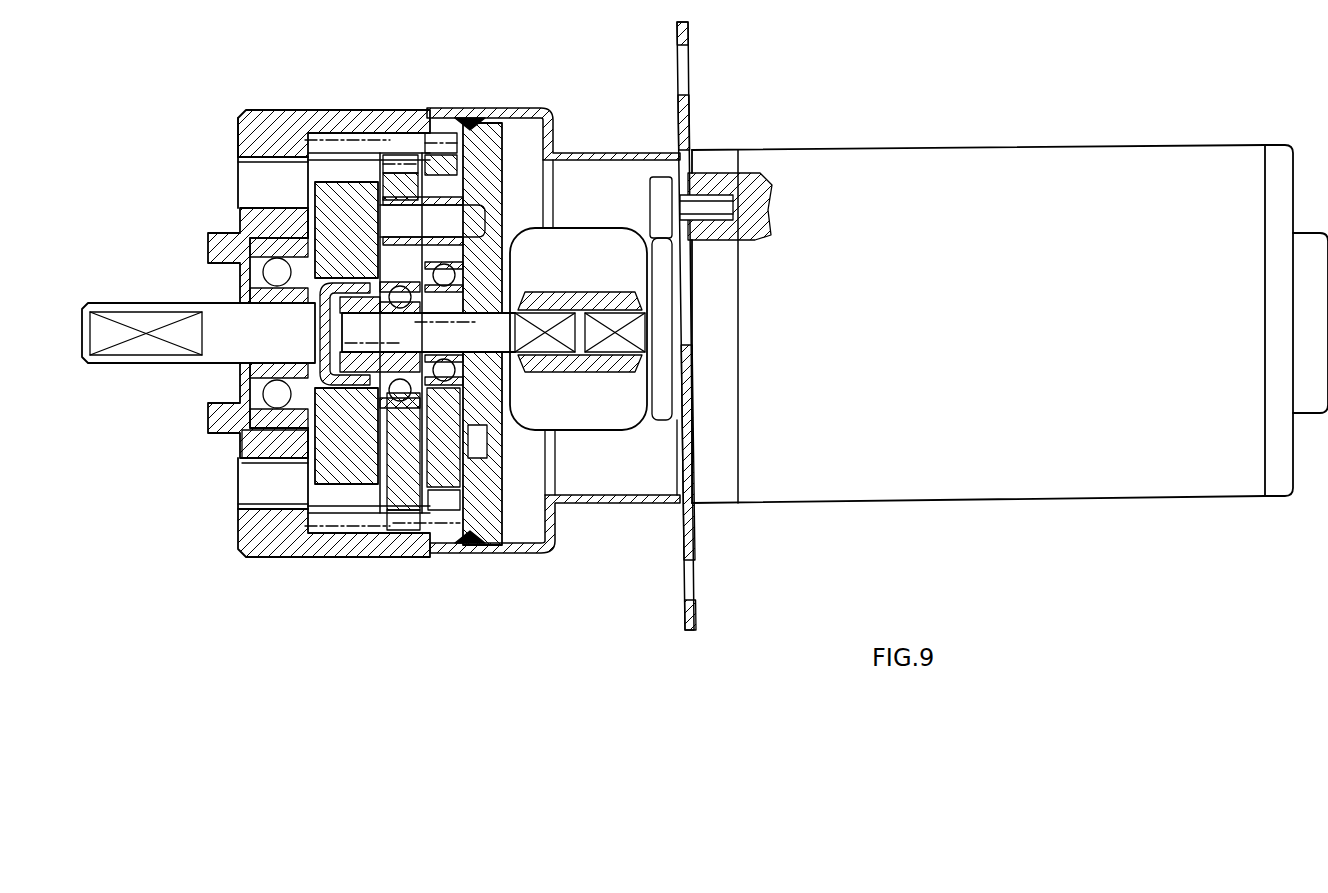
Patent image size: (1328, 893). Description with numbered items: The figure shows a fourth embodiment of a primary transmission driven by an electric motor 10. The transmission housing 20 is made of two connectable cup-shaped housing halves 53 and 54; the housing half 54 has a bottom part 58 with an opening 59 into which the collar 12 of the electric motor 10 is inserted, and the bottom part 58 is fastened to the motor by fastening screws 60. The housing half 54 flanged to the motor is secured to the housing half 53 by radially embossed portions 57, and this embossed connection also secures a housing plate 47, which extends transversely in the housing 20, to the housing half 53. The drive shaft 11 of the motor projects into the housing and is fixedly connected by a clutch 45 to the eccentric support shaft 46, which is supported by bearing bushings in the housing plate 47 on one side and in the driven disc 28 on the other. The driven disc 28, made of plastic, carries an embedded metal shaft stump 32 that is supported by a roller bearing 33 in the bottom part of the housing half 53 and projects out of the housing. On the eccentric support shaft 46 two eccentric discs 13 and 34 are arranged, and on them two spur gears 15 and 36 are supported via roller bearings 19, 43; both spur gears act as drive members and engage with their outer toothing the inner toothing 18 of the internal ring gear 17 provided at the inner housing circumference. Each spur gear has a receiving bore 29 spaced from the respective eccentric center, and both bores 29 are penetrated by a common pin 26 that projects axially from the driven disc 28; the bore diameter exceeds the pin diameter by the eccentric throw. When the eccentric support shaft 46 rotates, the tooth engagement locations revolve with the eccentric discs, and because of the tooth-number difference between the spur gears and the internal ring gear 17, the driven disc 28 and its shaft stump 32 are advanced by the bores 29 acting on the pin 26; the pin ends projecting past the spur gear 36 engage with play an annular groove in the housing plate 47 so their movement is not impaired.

The electric motor 10 is at (922, 165).
The drive shaft 11 is at (610, 313).
The collar 12 is at (690, 287).
The eccentric disc 13 is at (455, 319).
The spur gear 15 is at (402, 480).
The internal ring gear 17 is at (340, 515).
The inner toothing 18 is at (388, 140).
The roller bearing 19 is at (452, 372).
The housing 20 is at (300, 558).
The pin 26 is at (557, 162).
The driven disc 28 is at (343, 197).
The receiving bore 29 is at (440, 183).
The shaft stump 32 is at (157, 362).
The roller bearing 33 is at (275, 272).
The eccentric disc 34 is at (414, 371).
The spur gear 36 is at (443, 470).
The roller bearing 43 is at (340, 427).
The clutch 45 is at (593, 360).
The eccentric support shaft 46 is at (558, 313).
The housing plate 47 is at (495, 205).
The housing half 53 is at (338, 140).
The housing half 54 is at (525, 547).
The radially embossed portions 57 is at (487, 108).
The bottom part 58 is at (677, 455).
The opening 59 is at (685, 410).
The fastening screws 60 is at (690, 140).